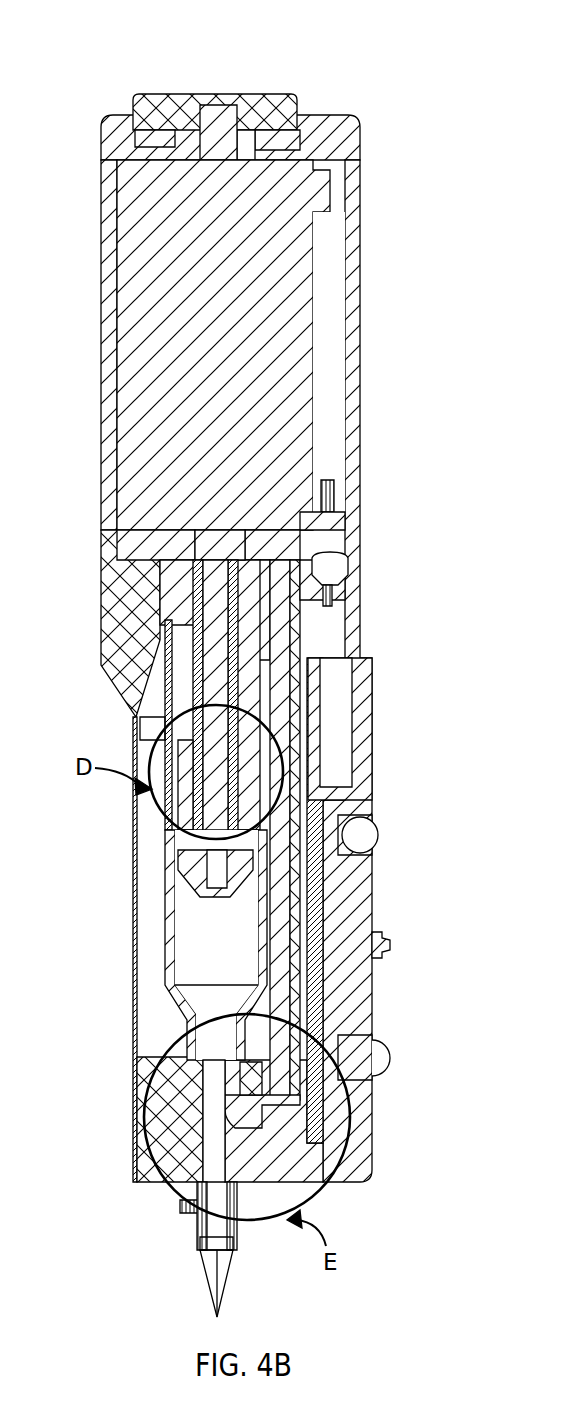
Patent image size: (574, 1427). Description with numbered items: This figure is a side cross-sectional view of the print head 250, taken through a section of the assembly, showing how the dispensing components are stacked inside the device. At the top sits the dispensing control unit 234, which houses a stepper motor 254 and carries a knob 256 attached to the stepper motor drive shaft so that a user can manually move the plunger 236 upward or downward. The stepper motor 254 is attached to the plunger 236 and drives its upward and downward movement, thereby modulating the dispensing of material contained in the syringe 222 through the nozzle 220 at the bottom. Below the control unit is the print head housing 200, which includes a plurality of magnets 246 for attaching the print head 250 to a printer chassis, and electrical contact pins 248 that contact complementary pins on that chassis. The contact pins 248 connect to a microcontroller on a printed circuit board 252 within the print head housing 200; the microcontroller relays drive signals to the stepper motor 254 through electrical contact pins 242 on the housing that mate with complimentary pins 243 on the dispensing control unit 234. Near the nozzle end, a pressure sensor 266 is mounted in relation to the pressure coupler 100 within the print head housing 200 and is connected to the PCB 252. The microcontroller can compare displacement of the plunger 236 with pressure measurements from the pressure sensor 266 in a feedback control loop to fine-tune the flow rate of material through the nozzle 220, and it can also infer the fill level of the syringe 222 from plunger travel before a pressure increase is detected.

The pressure coupler 100 is at (180, 1205).
The print head housing 200 is at (134, 880).
The nozzle 220 is at (238, 1242).
The syringe 222 is at (165, 960).
The dispensing control unit 234 is at (362, 190).
The plunger 236 is at (195, 672).
The electrical contact pins 242 is at (337, 600).
The complimentary pins 243 is at (331, 508).
The magnets 246 is at (376, 842).
The electrical contact pins 248 is at (392, 946).
The print head 250 is at (214, 82).
The printed circuit board 252 is at (308, 721).
The stepper motor 254 is at (103, 390).
The knob 256 is at (296, 118).
The pressure sensor 266 is at (315, 1147).